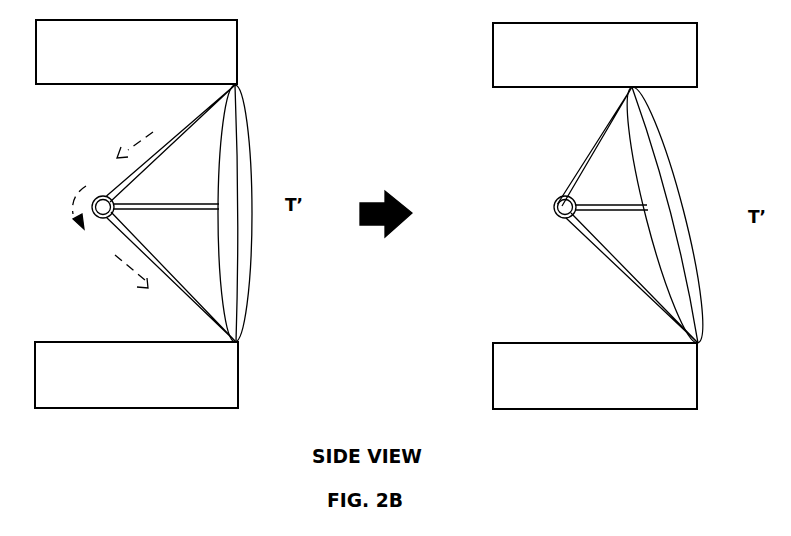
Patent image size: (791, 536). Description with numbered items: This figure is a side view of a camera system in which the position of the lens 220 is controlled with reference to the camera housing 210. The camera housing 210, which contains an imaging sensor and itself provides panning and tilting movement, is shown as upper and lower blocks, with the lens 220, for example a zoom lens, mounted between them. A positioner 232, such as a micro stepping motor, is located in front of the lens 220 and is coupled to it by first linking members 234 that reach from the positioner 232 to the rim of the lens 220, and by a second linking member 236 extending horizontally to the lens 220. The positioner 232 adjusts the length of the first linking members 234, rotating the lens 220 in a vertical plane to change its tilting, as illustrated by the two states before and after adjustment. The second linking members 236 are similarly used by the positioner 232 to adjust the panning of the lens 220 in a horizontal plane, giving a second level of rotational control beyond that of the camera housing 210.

The camera housing 210 is at (366, 214).
The lens 220 is at (245, 148).
The positioner 232 is at (107, 192).
The first linking members 234 is at (193, 122).
The second linking members 236 is at (135, 207).